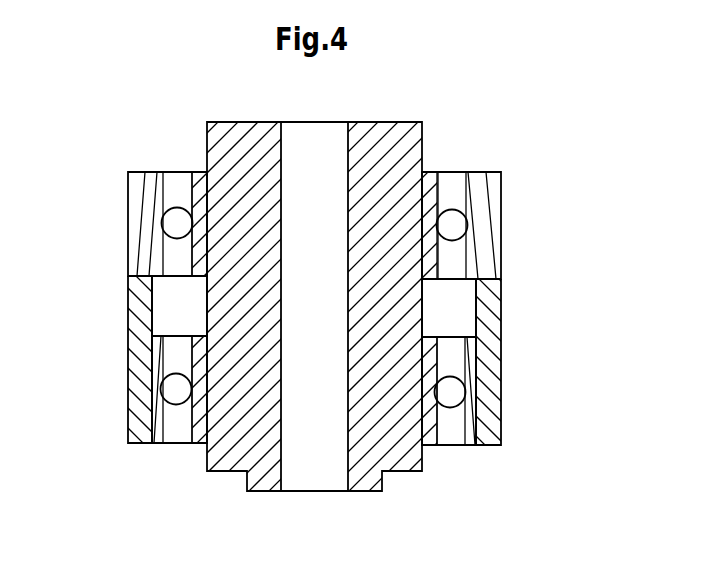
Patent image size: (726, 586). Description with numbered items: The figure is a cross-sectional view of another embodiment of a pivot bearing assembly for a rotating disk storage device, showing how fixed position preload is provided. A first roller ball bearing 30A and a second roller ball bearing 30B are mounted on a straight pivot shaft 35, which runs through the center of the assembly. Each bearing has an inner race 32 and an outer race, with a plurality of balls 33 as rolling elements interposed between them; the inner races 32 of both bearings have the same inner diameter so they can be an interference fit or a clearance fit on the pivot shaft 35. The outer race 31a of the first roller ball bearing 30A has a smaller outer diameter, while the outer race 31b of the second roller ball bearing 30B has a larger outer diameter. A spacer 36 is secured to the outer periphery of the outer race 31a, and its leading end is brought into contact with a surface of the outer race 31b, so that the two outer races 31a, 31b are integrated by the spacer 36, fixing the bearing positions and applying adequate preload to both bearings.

The pivot shaft 35 is at (385, 122).
The spacer 36 is at (501, 354).
The first roller ball bearing 30A is at (447, 447).
The second roller ball bearing 30B is at (477, 172).
The outer race 31a is at (152, 445).
The outer race 31b is at (127, 227).
The inner race 32 is at (207, 171).
The balls 33 is at (177, 222).